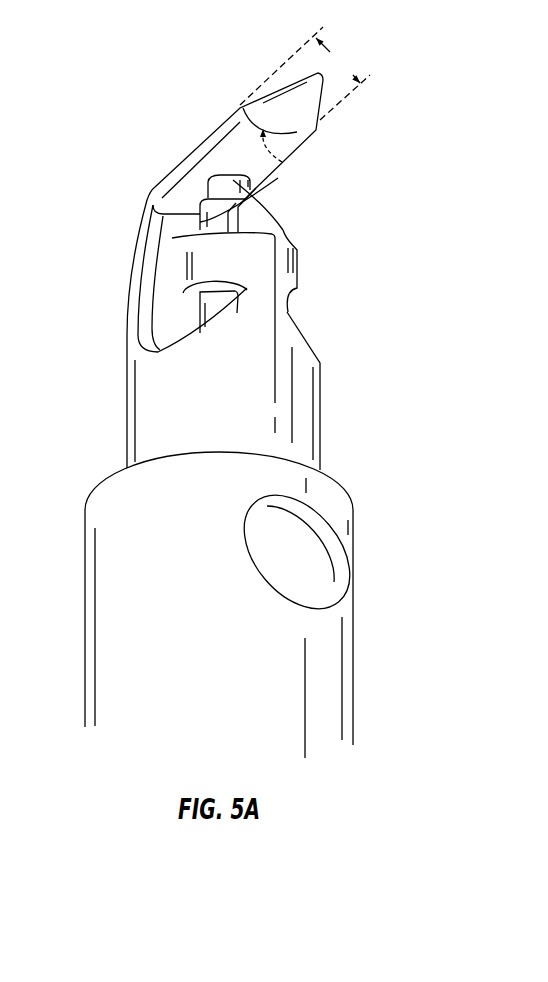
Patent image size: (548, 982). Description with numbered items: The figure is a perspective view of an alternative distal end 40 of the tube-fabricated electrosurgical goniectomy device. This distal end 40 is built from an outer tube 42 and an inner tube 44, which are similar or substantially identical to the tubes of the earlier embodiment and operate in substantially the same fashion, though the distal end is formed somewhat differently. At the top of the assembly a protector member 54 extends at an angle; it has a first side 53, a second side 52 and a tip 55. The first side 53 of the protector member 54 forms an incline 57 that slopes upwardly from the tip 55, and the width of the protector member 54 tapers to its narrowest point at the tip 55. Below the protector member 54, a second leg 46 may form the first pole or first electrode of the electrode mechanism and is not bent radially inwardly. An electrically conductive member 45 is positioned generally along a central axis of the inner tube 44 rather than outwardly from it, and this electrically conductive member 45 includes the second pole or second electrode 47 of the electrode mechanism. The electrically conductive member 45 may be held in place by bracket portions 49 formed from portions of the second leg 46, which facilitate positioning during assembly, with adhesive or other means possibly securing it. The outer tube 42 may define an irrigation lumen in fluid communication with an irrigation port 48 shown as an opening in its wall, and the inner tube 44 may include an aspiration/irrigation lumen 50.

The distal end 40 is at (138, 189).
The outer tube 42 is at (103, 518).
The inner tube 44 is at (143, 404).
The electrically conductive member 45 is at (213, 227).
The second leg 46 is at (280, 210).
The second electrode 47 is at (270, 214).
The irrigation port 48 is at (262, 565).
The bracket portions 49 is at (207, 267).
The aspiration/irrigation lumen 50 is at (160, 340).
The second side 52 is at (167, 167).
The first side 53 is at (282, 162).
The protector member 54 is at (237, 117).
The tip 55 is at (307, 47).
The incline 57 is at (312, 100).